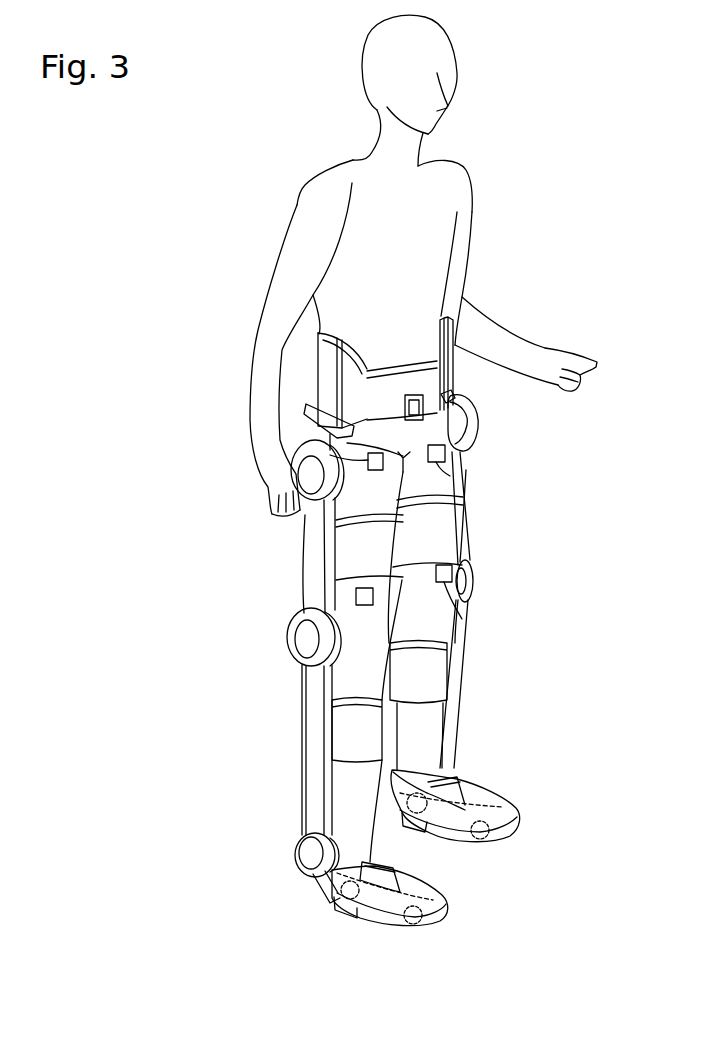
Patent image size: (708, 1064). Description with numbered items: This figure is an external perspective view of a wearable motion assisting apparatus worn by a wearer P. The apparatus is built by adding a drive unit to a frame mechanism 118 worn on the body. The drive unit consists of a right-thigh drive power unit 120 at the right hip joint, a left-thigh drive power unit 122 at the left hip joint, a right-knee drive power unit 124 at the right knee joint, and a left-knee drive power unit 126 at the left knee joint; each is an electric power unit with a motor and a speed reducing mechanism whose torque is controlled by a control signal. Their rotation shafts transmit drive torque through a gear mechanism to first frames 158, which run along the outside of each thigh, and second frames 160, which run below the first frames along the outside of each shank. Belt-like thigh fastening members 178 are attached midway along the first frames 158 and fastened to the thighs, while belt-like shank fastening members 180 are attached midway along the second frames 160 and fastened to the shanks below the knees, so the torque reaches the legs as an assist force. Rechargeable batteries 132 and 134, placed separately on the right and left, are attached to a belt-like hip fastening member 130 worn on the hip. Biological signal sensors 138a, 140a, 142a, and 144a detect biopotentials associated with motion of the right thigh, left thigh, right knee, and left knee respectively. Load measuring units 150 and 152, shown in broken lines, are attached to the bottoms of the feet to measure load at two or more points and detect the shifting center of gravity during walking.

The wearer P is at (462, 262).
The frame mechanism 118 is at (284, 553).
The right-thigh drive power unit 120 is at (308, 475).
The left-thigh drive power unit 122 is at (471, 430).
The right-knee drive power unit 124 is at (305, 636).
The left-knee drive power unit 126 is at (473, 580).
The hip fastening member 130 is at (474, 413).
The battery 132 is at (318, 380).
The battery 134 is at (456, 357).
The biological signal sensor 138a is at (307, 438).
The biological signal sensor 140a is at (450, 476).
The biological signal sensor 142a is at (364, 606).
The biological signal sensor 144a is at (462, 619).
The load measuring unit 150 is at (448, 913).
The load measuring unit 152 is at (515, 828).
The first frame 158 is at (310, 520).
The second frame 160 is at (310, 676).
The thigh fastening member 178 is at (355, 550).
The shank fastening member 180 is at (345, 745).